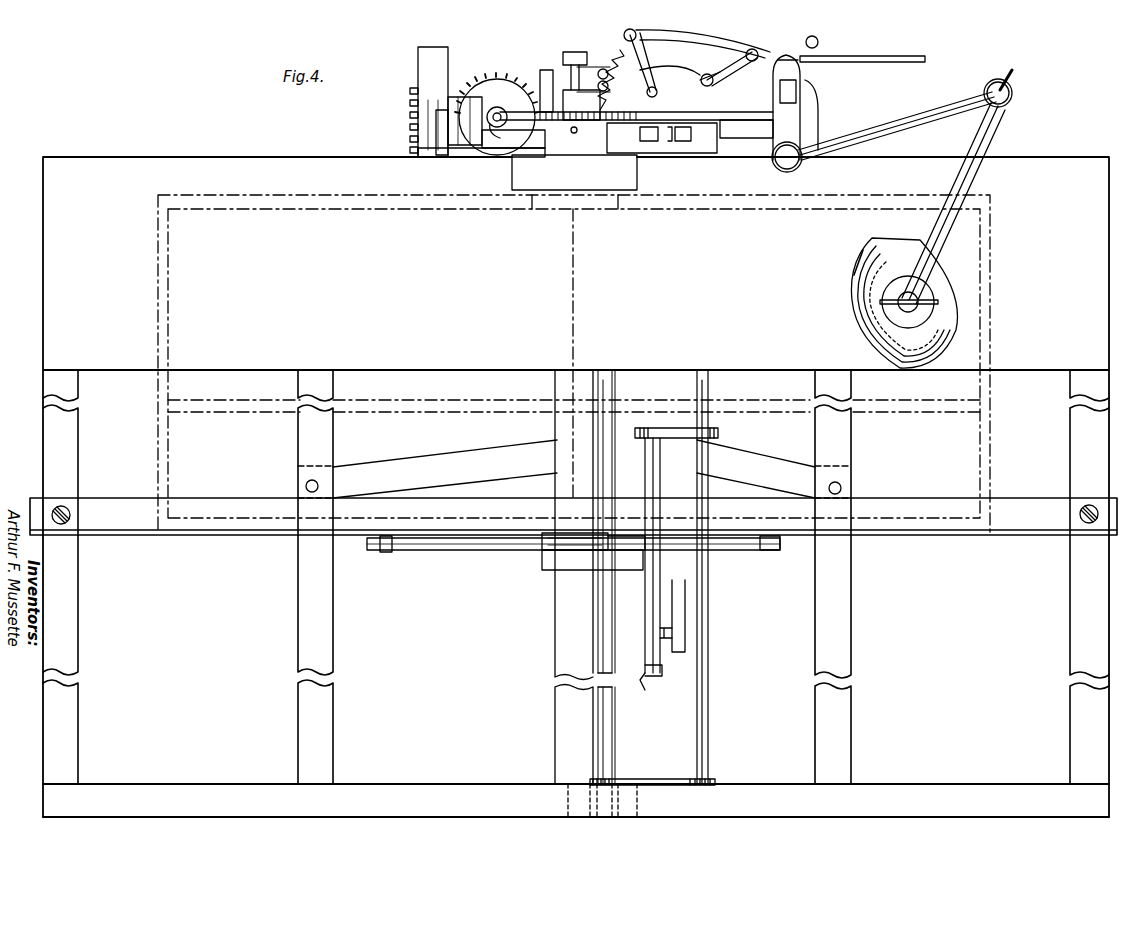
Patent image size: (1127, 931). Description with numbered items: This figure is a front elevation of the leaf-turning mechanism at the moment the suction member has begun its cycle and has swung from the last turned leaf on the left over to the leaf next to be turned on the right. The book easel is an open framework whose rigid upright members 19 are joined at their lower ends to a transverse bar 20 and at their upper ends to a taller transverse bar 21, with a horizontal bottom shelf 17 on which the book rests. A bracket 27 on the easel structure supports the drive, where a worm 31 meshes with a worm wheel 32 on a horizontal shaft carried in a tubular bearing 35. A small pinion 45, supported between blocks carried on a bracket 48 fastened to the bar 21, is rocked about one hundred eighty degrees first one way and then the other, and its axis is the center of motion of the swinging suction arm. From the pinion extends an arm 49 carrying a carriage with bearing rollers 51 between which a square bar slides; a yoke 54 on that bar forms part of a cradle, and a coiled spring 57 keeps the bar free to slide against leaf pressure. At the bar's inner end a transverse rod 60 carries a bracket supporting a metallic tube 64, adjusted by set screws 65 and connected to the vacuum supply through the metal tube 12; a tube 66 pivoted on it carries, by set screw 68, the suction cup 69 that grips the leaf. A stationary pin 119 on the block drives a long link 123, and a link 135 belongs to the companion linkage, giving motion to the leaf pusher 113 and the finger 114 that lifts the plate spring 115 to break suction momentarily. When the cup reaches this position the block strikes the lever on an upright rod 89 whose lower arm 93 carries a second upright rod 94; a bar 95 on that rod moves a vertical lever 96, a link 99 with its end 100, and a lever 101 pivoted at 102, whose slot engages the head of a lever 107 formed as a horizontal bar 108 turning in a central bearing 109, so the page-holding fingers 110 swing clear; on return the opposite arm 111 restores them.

The metal tube 12 is at (805, 122).
The bottom shelf 17 is at (140, 528).
The upright members 19 is at (70, 596).
The transverse bar 20 is at (464, 800).
The transverse bar 21 is at (60, 246).
The bracket 27 is at (418, 130).
The worm 31 is at (418, 99).
The worm wheel 32 is at (510, 82).
The tubular bearing 35 is at (504, 126).
The pinion 45 is at (562, 150).
The bracket 48 is at (540, 158).
The arm 49 is at (661, 139).
The bearing rollers 51 is at (676, 141).
The yoke 54 is at (690, 141).
The coiled spring 57 is at (593, 72).
The transverse rod 60 is at (640, 130).
The metallic tube 64 is at (898, 140).
The set screws 65 is at (780, 168).
The tube 66 is at (978, 182).
The set screw 68 is at (928, 288).
The suction cup 69 is at (855, 260).
The upright rod 89 is at (598, 634).
The lower arm 93 is at (641, 782).
The second upright rod 94 is at (710, 604).
The bar 95 is at (670, 428).
The vertical lever 96 is at (652, 476).
The link 99 is at (666, 670).
The link end 100 is at (645, 690).
The lever 101 is at (672, 592).
The pivot 102 is at (660, 636).
The lever 107 is at (634, 550).
The horizontal bar 108 is at (470, 550).
The bearing 109 is at (555, 541).
The page-holding fingers 110 is at (392, 552).
The lever arm 111 is at (440, 152).
The leaf pusher 113 is at (873, 62).
The finger 114 is at (575, 134).
The plate spring 115 is at (745, 136).
The stationary pin 119 is at (570, 70).
The long link 123 is at (688, 56).
The link 135 is at (732, 52).